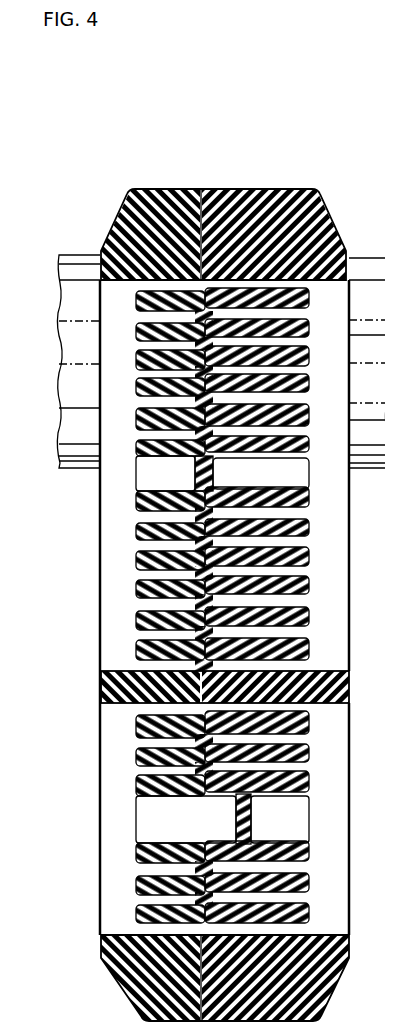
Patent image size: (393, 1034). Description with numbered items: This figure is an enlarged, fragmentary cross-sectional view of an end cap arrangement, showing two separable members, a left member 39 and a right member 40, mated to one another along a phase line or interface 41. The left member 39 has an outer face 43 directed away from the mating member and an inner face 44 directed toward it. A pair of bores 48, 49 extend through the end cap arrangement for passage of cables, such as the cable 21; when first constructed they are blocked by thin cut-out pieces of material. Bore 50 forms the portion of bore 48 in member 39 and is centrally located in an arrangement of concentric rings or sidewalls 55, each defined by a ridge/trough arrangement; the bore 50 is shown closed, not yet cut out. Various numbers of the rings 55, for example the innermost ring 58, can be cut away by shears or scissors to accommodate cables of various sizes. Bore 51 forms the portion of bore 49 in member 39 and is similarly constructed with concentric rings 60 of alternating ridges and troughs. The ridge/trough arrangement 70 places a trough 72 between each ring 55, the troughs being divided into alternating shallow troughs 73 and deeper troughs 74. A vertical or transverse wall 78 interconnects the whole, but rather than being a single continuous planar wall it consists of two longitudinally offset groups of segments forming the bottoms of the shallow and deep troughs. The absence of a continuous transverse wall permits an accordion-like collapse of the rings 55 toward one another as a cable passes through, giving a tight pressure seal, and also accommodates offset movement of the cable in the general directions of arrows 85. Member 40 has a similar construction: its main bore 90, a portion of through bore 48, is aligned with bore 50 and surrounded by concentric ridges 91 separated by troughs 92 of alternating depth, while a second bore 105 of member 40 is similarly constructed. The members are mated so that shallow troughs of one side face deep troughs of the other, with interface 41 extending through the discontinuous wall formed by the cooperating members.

The left member 39 is at (162, 182).
The right member 40 is at (258, 182).
The interface 41 is at (207, 190).
The outer face 43 is at (250, 330).
The inner face 44 is at (270, 358).
The bore 48 is at (188, 471).
The bore 49 is at (228, 806).
The bore 50 is at (147, 481).
The bore 51 is at (165, 835).
The concentric rings 55 is at (128, 293).
The innermost ring 58 is at (92, 450).
The concentric rings 60 is at (128, 722).
The ridge/trough arrangement 70 is at (98, 489).
The trough 72 is at (237, 302).
The shallow troughs 73 is at (128, 352).
The deep troughs 74 is at (195, 432).
The transverse wall 78 is at (240, 302).
The arrows 85 is at (383, 564).
The main bore 90 is at (222, 450).
The concentric ridges 91 is at (330, 353).
The troughs 92 is at (297, 301).
The second bore 105 is at (245, 790).
The cable 21 is at (367, 819).